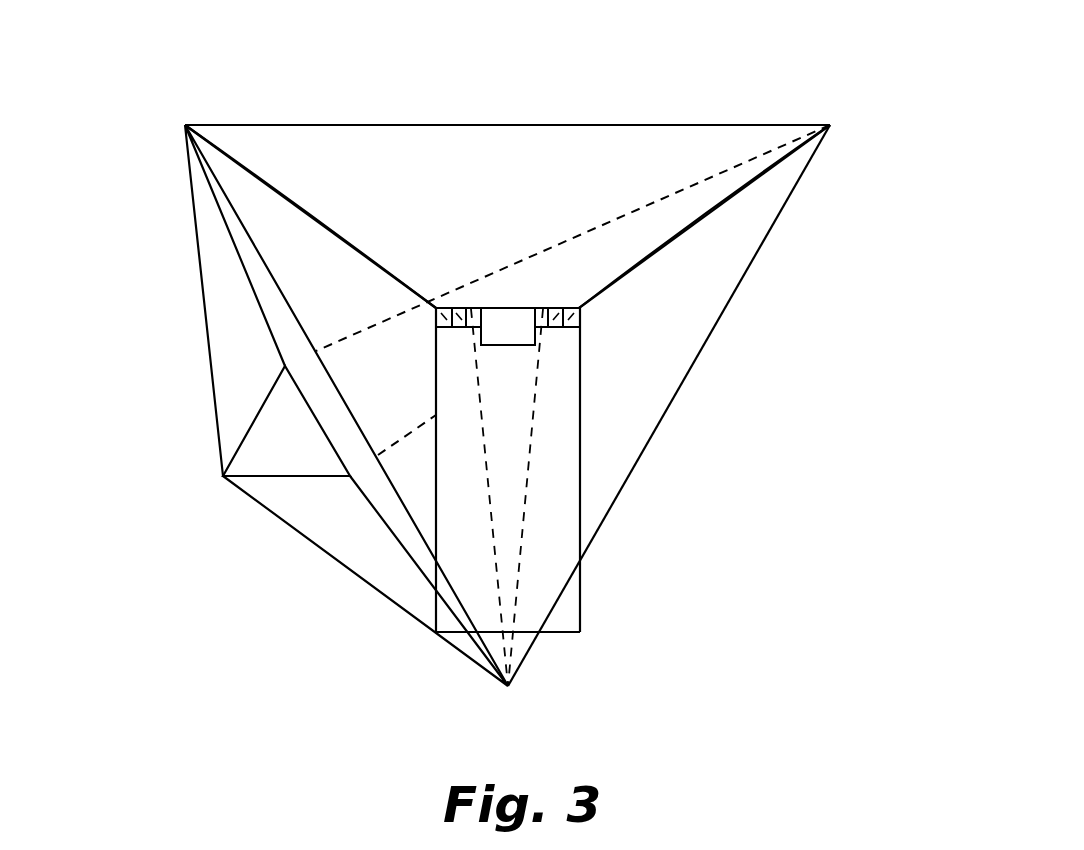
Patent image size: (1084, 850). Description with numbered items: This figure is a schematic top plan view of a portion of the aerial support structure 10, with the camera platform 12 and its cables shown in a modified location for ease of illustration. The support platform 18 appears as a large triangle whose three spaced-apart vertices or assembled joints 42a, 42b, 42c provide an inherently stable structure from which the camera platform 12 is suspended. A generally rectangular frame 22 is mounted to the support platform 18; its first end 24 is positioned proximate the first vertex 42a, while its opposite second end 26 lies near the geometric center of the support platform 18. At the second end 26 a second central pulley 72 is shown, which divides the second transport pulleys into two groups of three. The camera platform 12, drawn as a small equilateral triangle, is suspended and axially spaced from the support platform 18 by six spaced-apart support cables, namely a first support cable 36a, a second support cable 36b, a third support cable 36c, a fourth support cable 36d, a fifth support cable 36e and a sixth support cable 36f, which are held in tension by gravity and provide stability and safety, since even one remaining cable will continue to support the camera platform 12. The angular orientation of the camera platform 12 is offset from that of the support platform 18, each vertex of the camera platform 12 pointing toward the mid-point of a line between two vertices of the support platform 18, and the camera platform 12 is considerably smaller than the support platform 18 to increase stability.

The aerial support structure 10 is at (565, 93).
The camera platform 12 is at (276, 451).
The support platform 18 is at (707, 344).
The frame 22 is at (580, 430).
The first end 24 is at (580, 603).
The second end 26 is at (580, 352).
The first support cable 36a is at (391, 281).
The second support cable 36b is at (384, 266).
The third support cable 36c is at (487, 489).
The fourth support cable 36d is at (527, 489).
The fifth support cable 36e is at (643, 260).
The sixth support cable 36f is at (626, 278).
The first vertex 42a is at (508, 686).
The second vertex 42b is at (830, 125).
The third vertex 42c is at (185, 125).
The second central pulley 72 is at (494, 336).